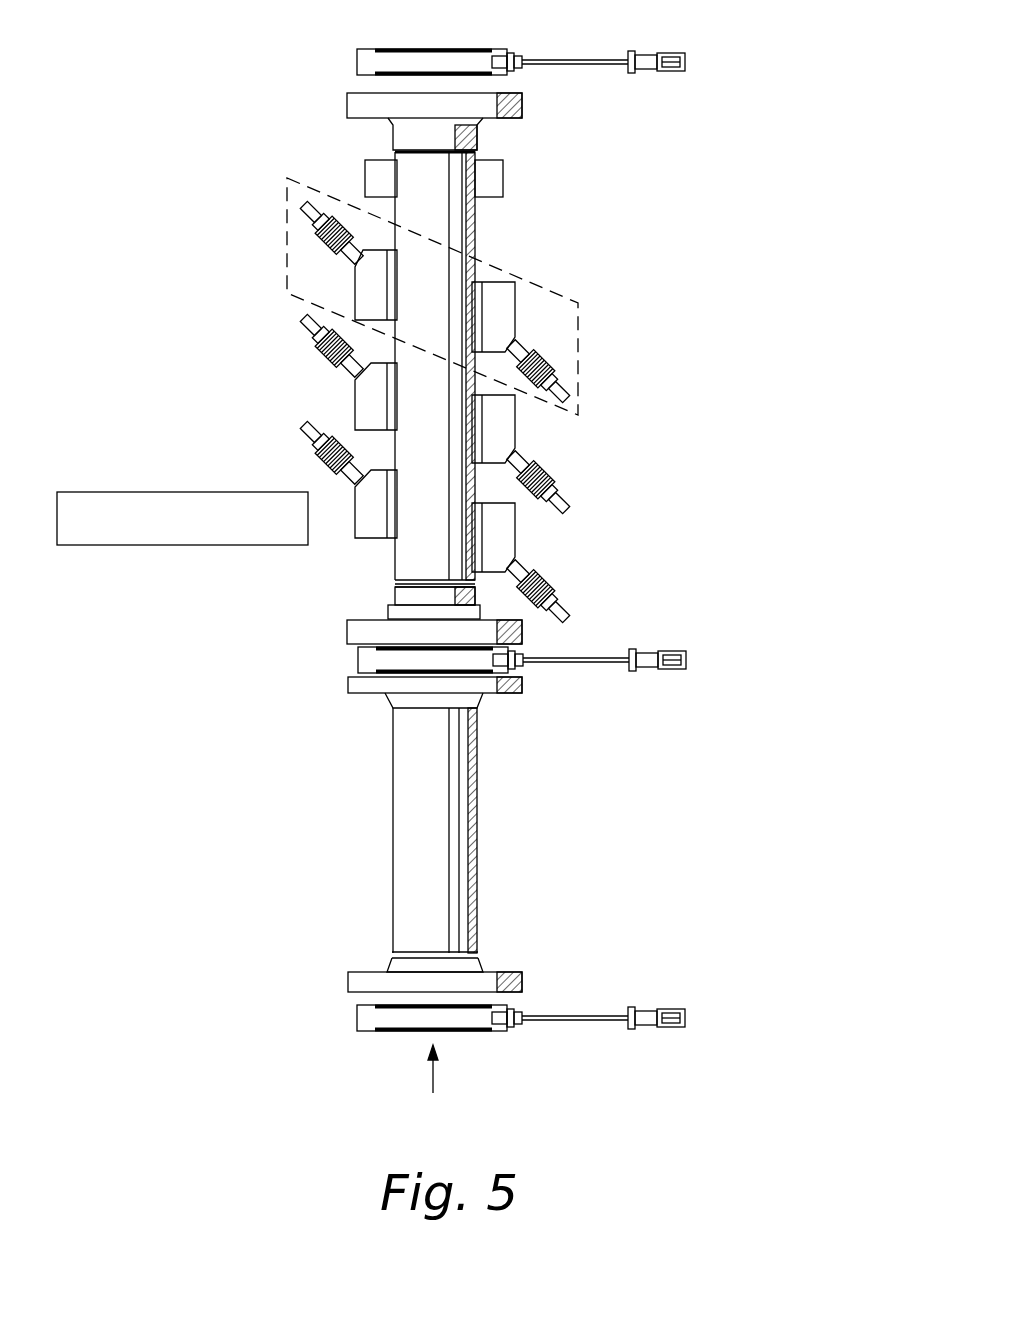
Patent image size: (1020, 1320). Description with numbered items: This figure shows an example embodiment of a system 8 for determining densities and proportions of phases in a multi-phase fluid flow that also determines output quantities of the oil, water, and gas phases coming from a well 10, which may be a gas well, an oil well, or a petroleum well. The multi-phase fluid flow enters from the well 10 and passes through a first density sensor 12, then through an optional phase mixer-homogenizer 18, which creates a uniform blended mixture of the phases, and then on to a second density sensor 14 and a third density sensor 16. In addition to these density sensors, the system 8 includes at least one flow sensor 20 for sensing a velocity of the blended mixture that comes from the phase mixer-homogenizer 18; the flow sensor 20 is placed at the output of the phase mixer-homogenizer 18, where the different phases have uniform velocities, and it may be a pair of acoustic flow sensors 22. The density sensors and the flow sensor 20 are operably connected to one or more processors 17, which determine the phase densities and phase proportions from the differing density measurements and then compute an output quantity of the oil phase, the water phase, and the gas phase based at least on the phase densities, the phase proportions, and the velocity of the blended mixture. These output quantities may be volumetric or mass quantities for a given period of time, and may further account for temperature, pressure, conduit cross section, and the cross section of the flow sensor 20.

The system 8 is at (757, 152).
The well 10 is at (435, 1086).
The first density sensor 12 is at (687, 1017).
The second density sensor 14 is at (687, 660).
The third density sensor 16 is at (660, 58).
The processors 17 is at (187, 492).
The phase mixer-homogenizer 18 is at (480, 833).
The flow sensor 20 is at (585, 270).
The acoustic flow sensors 22 is at (285, 220).